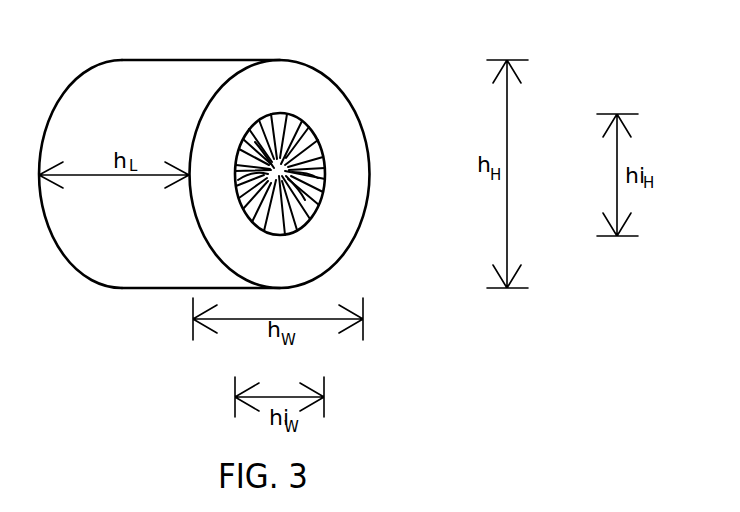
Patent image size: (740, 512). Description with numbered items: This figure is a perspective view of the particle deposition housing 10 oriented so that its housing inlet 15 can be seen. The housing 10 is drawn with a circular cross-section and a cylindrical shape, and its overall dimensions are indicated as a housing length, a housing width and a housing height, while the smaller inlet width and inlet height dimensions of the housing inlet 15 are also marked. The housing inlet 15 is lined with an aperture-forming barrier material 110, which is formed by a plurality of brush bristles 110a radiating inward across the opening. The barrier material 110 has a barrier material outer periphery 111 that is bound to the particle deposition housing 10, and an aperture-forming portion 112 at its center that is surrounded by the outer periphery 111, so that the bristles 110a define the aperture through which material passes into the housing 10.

The particle deposition housing 10 is at (340, 77).
The housing inlet 15 is at (315, 143).
The aperture-forming barrier material 110 is at (289, 118).
The brush bristles 110a is at (284, 113).
The aperture-forming portion 112 is at (240, 150).
The barrier material outer periphery 111 is at (316, 178).